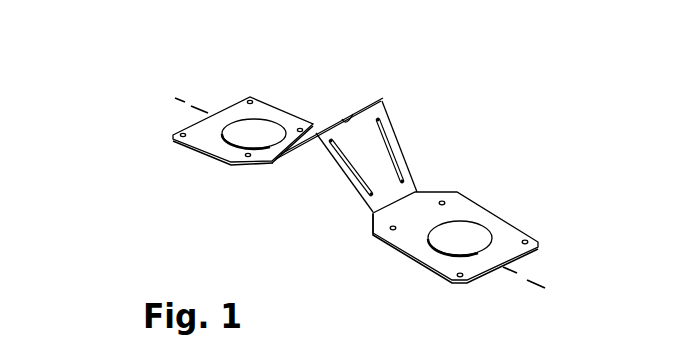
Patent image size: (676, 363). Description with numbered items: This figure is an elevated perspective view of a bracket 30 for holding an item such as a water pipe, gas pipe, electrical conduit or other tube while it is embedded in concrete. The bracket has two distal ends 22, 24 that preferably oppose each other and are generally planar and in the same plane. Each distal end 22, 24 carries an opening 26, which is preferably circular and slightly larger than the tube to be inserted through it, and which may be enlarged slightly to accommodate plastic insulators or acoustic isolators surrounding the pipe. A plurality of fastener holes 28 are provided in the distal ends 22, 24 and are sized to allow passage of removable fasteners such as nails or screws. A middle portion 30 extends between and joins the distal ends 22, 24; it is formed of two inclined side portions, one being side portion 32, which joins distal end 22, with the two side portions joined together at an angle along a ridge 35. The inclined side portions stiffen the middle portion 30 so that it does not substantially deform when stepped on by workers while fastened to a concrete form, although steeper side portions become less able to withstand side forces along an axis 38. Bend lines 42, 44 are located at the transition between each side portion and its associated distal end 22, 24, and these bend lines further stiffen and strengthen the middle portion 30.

The distal end 22 is at (405, 238).
The distal end 24 is at (208, 142).
The opening 26 is at (255, 133).
The fastener hole 28 is at (173, 134).
The middle portion 30 is at (324, 161).
The inclined side portion 32 is at (373, 153).
The ridge 35 is at (382, 98).
The axis 38 is at (191, 107).
The bend line 42 is at (418, 192).
The bend line 44 is at (311, 133).